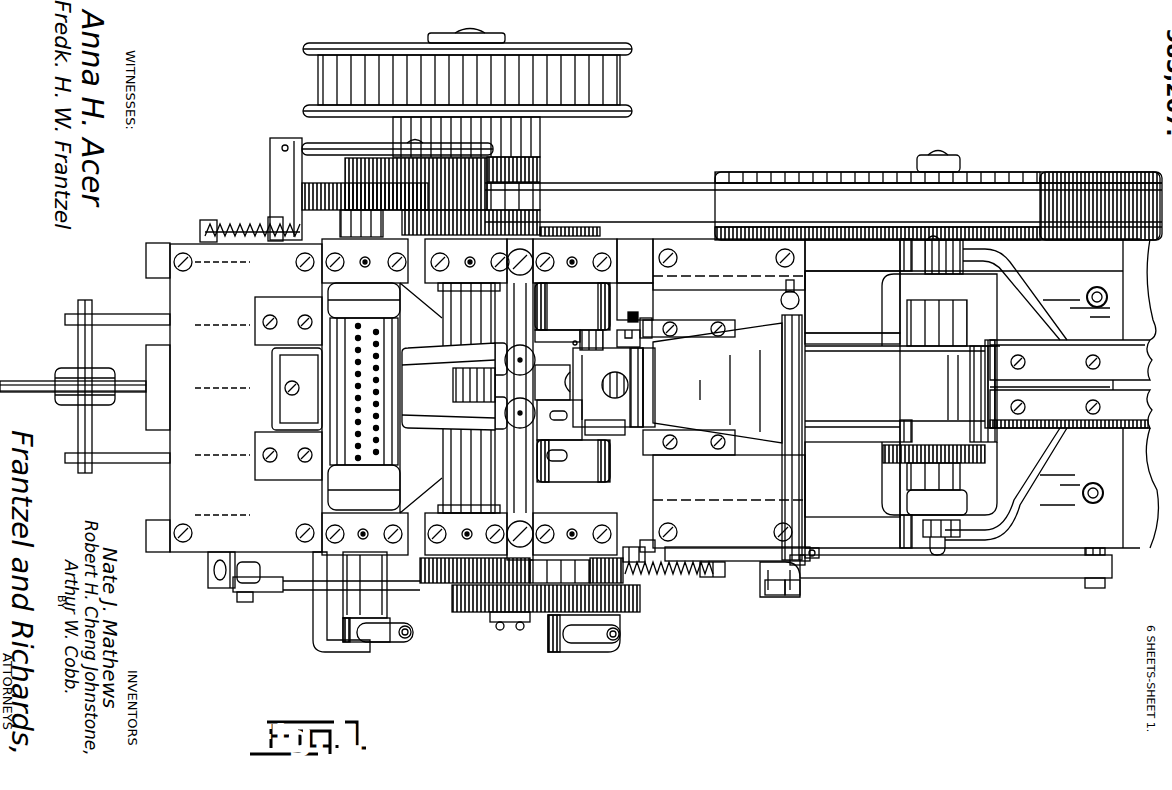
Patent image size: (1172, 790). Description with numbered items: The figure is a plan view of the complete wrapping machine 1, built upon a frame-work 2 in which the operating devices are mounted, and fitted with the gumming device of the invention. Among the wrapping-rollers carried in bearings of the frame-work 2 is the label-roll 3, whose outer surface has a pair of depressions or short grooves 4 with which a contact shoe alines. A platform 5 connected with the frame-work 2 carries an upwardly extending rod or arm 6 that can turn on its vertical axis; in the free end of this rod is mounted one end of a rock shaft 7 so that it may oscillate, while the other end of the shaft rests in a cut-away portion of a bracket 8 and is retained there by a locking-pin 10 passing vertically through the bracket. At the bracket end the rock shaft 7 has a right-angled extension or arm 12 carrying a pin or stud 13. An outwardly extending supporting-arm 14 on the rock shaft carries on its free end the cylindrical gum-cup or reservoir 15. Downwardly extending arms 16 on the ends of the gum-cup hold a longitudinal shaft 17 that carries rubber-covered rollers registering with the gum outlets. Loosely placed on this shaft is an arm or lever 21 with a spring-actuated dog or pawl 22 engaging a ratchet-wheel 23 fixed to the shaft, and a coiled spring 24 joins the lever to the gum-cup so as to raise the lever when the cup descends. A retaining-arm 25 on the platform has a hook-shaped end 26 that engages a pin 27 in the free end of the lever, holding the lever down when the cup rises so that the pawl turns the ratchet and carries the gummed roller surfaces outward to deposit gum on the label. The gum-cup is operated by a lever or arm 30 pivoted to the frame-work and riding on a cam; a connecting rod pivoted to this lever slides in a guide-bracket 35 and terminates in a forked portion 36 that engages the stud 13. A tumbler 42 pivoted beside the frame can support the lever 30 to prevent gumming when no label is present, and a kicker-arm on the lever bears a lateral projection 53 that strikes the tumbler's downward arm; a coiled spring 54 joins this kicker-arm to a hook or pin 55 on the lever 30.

The wrapping machine 1 is at (823, 193).
The frame-work 2 is at (873, 268).
The label-roll 3 is at (595, 300).
The depressions or short grooves 4 is at (548, 458).
The platform 5 is at (729, 393).
The upwardly extending rod or arm 6 is at (801, 300).
The rock shaft 7 is at (806, 383).
The bracket 8 is at (753, 556).
The locking-pin 10 is at (820, 555).
The right-angled extension or arm 12 is at (750, 570).
The pin or stud 13 is at (790, 597).
The supporting-arm 14 is at (717, 383).
The gum-cup or reservoir 15 is at (647, 410).
The downwardly extending arms 16 is at (592, 327).
The shaft 17 is at (587, 323).
The arm or lever 21 is at (648, 328).
The spring-actuated dog or pawl 22 is at (620, 343).
The ratchet-wheel 23 is at (572, 343).
The coiled spring 24 is at (608, 387).
The retaining-arm 25 is at (655, 338).
The hook-shaped end 26 is at (630, 318).
The pin 27 is at (645, 320).
The lever or arm 30 is at (940, 578).
The guide-bracket 35 is at (773, 597).
The forked portion 36 is at (805, 583).
The tumbler 42 is at (648, 546).
The lateral projection 53 is at (638, 547).
The coiled spring 54 is at (676, 576).
The hook or pin 55 is at (713, 578).